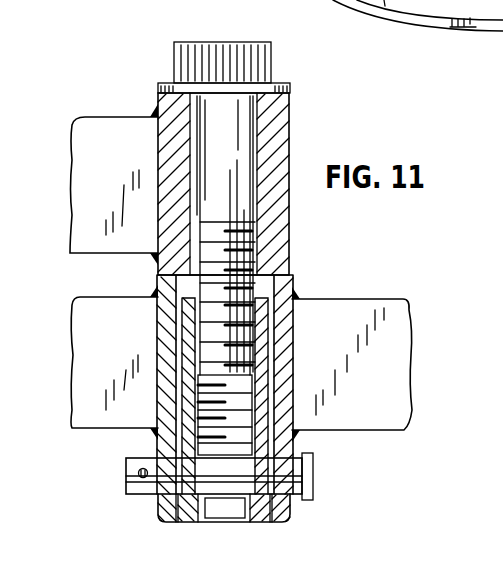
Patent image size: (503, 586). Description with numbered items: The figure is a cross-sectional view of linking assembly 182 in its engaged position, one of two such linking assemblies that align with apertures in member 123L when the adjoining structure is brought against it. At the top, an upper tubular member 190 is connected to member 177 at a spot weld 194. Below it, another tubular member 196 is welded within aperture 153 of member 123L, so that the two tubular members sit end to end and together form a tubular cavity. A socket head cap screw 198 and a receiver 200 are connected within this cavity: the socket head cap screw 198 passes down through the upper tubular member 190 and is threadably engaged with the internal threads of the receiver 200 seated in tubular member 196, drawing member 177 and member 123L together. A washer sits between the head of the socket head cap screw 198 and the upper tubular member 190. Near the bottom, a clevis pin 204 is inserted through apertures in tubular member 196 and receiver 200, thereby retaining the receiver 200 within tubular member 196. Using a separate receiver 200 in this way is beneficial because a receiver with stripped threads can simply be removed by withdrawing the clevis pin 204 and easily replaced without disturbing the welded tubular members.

The linking assembly 182 is at (106, 88).
The spot weld 194 is at (157, 107).
The socket head cap screw 198 is at (268, 60).
The upper tubular member 190 is at (282, 136).
The member 177 is at (122, 248).
The aperture 153 is at (290, 287).
The member 123L is at (378, 308).
The tubular member 196 is at (282, 428).
The receiver 200 is at (150, 437).
The clevis pin 204 is at (277, 478).